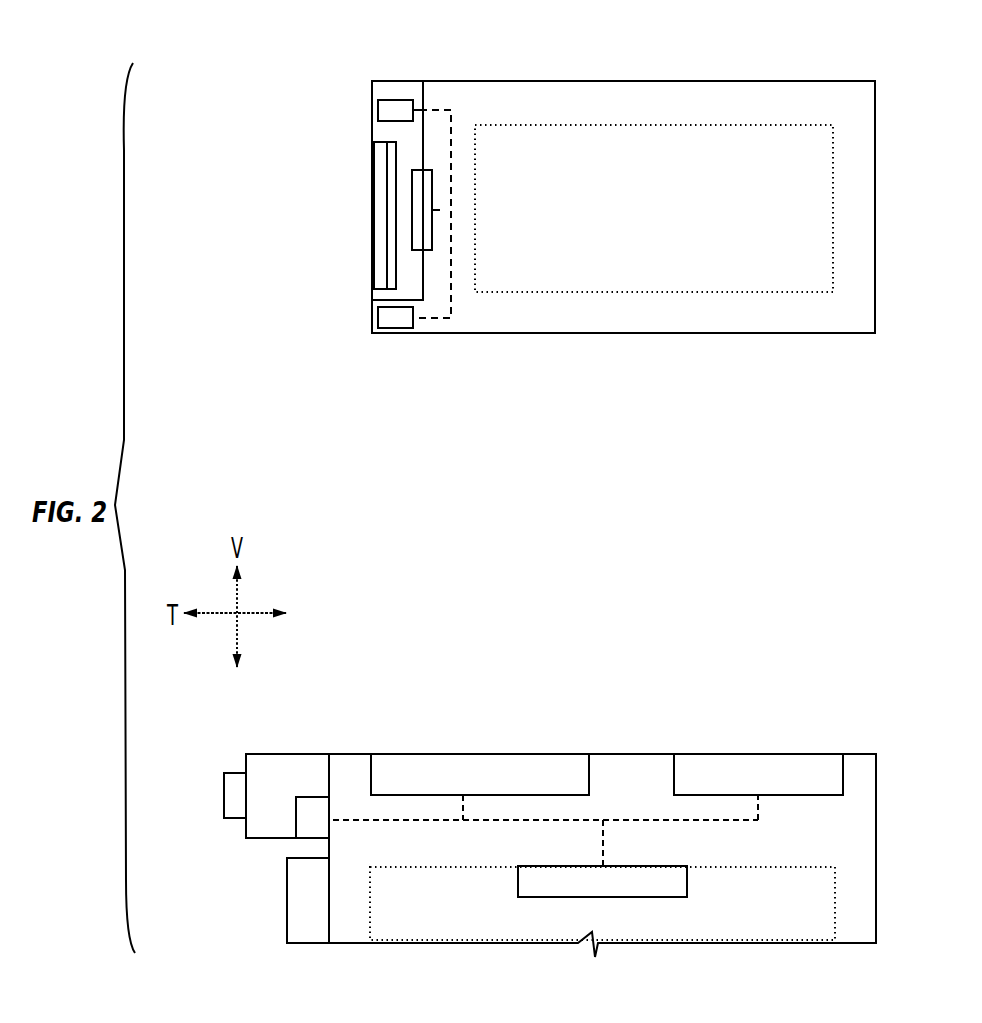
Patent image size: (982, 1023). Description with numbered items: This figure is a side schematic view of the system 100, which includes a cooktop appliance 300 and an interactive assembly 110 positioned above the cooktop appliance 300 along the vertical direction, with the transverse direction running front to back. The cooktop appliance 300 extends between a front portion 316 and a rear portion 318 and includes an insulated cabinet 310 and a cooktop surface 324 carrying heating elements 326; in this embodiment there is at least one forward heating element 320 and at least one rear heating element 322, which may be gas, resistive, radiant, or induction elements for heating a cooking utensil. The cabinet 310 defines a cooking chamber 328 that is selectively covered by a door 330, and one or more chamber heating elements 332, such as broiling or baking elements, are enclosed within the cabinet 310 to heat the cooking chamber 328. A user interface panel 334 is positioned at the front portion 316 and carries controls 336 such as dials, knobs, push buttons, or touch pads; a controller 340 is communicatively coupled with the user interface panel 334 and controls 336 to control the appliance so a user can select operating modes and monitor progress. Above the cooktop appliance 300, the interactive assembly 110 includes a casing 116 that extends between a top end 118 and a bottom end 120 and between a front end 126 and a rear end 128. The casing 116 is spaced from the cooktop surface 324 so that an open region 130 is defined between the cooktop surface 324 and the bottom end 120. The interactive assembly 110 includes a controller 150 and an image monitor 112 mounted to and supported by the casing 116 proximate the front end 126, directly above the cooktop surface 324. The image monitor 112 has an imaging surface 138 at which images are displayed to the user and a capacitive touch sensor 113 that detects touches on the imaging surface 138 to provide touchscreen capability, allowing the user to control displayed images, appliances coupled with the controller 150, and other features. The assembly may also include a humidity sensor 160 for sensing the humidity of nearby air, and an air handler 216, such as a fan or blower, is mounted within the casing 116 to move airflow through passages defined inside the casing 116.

The system 100 is at (208, 188).
The interactive assembly 110 is at (878, 170).
The image monitor 112 is at (370, 220).
The capacitive touch sensor 113 is at (389, 142).
The casing 116 is at (845, 93).
The top end 118 is at (765, 83).
The bottom end 120 is at (793, 335).
The front end 126 is at (368, 320).
The rear end 128 is at (878, 307).
The imaging surface 138 is at (369, 262).
The controller 150 is at (395, 100).
The humidity sensor 160 is at (395, 329).
The air handler 216 is at (432, 186).
The open region 130 is at (651, 699).
The cooktop appliance 300 is at (880, 840).
The cabinet 310 is at (862, 930).
The front portion 316 is at (360, 740).
The rear portion 318 is at (880, 736).
The forward heating element 320 is at (532, 766).
The rear heating element 322 is at (724, 758).
The cooktop surface 324 is at (630, 753).
The heating element 326 is at (410, 765).
The cooking chamber 328 is at (739, 929).
The door 330 is at (298, 921).
The chamber heating element 332 is at (523, 883).
The user interface panel 334 is at (246, 772).
The controls 336 is at (232, 802).
The controller 340 is at (305, 827).